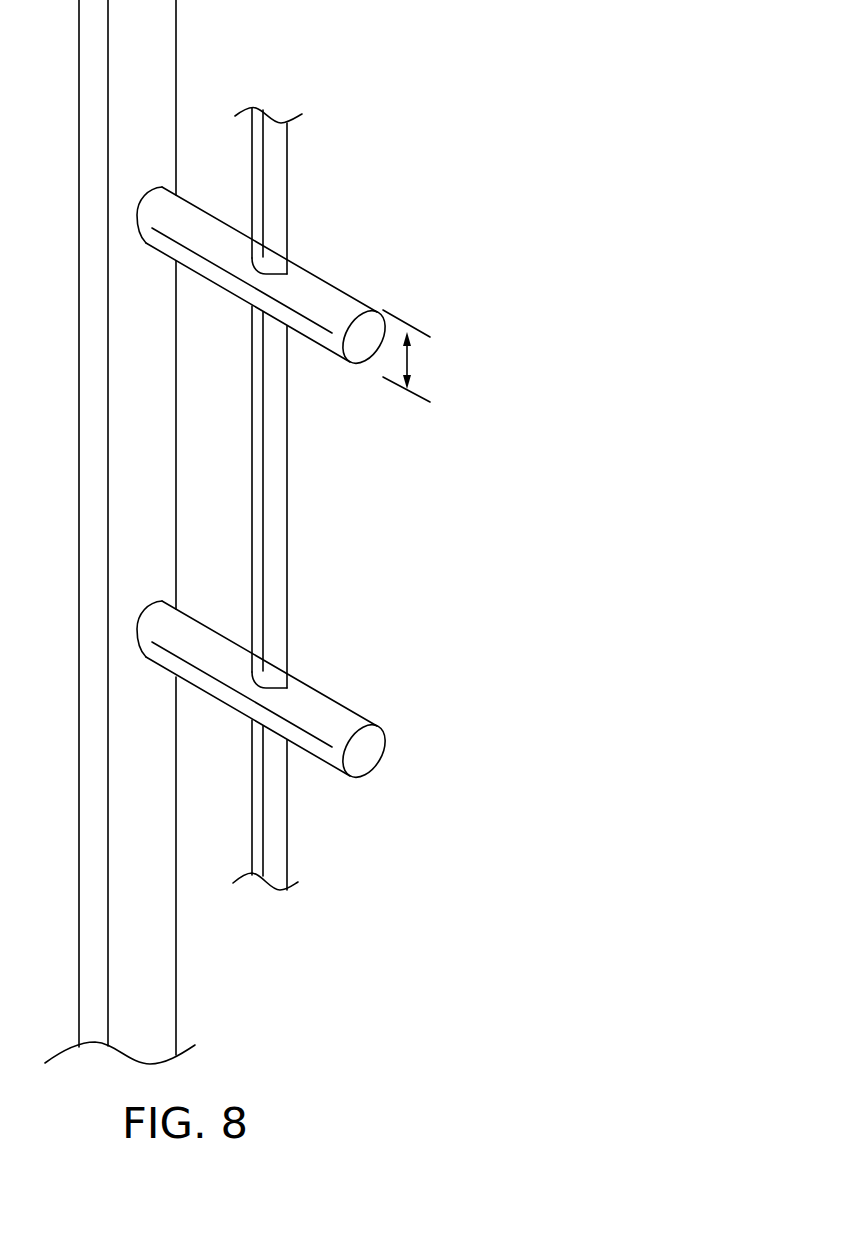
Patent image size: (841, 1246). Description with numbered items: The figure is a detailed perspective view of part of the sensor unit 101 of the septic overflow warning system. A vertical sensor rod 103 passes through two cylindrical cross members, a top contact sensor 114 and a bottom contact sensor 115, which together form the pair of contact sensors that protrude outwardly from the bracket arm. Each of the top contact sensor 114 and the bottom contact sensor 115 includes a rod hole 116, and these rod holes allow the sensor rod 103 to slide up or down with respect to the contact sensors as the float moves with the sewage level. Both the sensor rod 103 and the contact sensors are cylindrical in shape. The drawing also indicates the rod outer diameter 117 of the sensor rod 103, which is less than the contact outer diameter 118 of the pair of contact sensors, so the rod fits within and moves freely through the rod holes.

The sensor unit 101 is at (442, 181).
The sensor rod 103 is at (287, 443).
The top contact sensor 114 is at (335, 282).
The bottom contact sensor 115 is at (336, 703).
The rod hole 116 is at (264, 272).
The rod outer diameter 117 is at (200, 473).
The contact outer diameter 118 is at (407, 389).